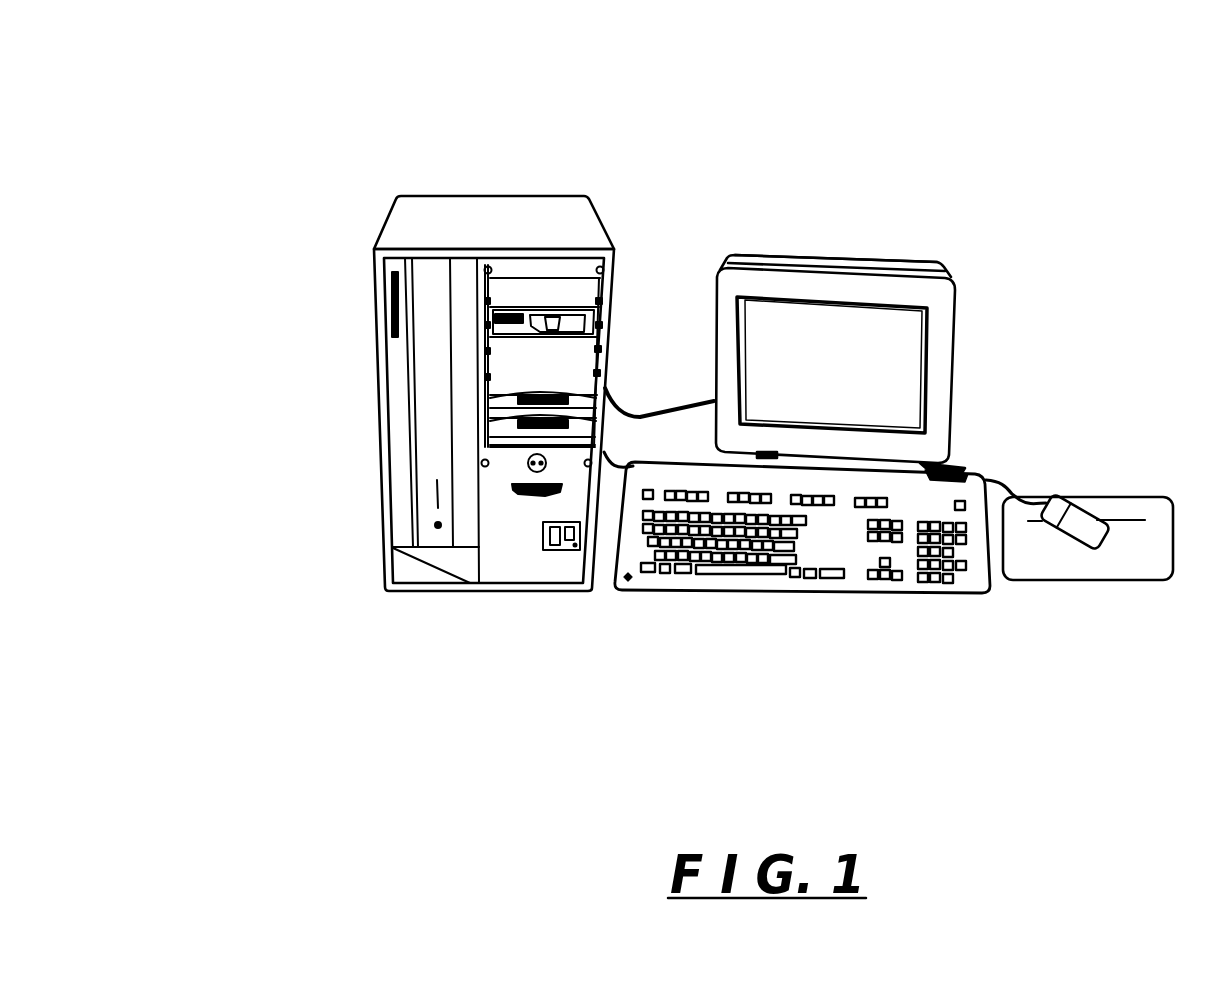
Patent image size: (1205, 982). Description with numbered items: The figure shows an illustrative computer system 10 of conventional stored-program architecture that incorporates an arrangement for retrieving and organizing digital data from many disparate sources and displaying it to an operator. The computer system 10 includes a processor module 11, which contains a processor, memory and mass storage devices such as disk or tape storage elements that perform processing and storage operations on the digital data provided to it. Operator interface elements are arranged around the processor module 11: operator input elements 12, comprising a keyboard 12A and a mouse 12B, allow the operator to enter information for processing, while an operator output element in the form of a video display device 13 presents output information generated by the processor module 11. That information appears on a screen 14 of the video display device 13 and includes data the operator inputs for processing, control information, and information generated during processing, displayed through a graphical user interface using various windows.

The computer system 10 is at (300, 110).
The processor module 11 is at (501, 195).
The operator input element(s) 12 is at (983, 645).
The keyboard 12A is at (846, 597).
The mouse 12B is at (1150, 590).
The video display device 13 is at (968, 362).
The screen 14 is at (378, 416).